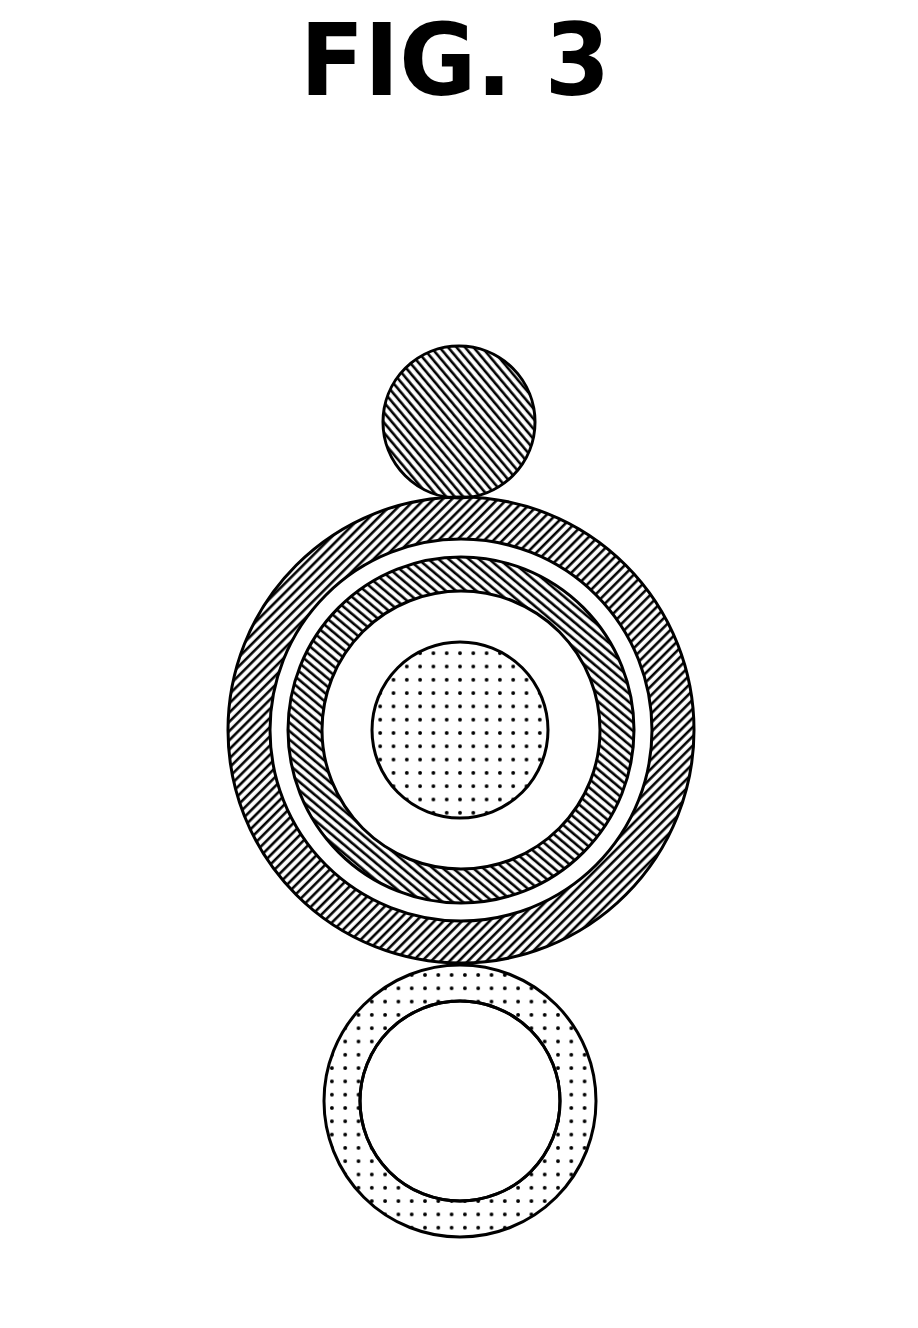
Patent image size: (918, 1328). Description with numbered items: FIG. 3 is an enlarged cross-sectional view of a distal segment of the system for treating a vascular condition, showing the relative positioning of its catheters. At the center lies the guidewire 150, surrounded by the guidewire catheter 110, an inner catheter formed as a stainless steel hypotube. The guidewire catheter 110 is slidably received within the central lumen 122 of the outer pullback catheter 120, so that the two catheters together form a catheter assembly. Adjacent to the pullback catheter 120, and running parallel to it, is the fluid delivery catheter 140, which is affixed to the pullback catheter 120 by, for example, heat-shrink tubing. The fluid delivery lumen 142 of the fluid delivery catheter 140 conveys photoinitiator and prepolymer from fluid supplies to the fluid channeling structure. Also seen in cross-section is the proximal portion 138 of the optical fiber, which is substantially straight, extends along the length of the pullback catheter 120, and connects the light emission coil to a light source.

The guidewire catheter 110 is at (469, 729).
The pullback catheter 120 is at (246, 663).
The central lumen 122 is at (284, 788).
The proximal portion 138 is at (506, 409).
The fluid delivery catheter 140 is at (344, 1090).
The fluid delivery lumen 142 is at (507, 1133).
The guidewire 150 is at (502, 731).